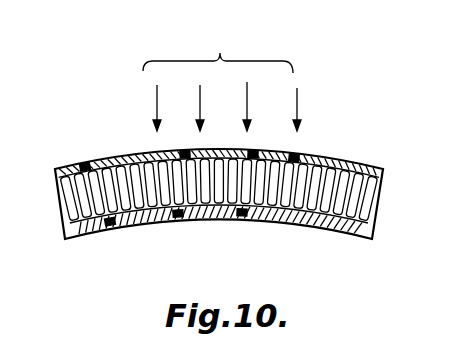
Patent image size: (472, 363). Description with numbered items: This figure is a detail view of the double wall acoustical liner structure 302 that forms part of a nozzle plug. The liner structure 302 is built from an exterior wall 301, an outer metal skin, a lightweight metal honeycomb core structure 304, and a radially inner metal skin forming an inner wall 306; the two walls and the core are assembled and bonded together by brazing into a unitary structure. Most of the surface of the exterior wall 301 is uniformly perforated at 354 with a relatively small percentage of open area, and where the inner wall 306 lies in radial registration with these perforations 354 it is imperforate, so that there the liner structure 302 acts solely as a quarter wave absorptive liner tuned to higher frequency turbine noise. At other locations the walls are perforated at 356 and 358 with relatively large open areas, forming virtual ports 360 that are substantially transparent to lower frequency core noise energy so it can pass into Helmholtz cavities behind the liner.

The exterior wall 301 is at (143, 152).
The double wall acoustical liner structure 302 is at (357, 159).
The honeycomb core structure 304 is at (100, 208).
The inner wall 306 is at (110, 224).
The perforations 354 is at (92, 162).
The perforations in outer wall 356 is at (254, 150).
The perforations in inner wall 358 is at (241, 223).
The virtual ports 360 is at (224, 52).